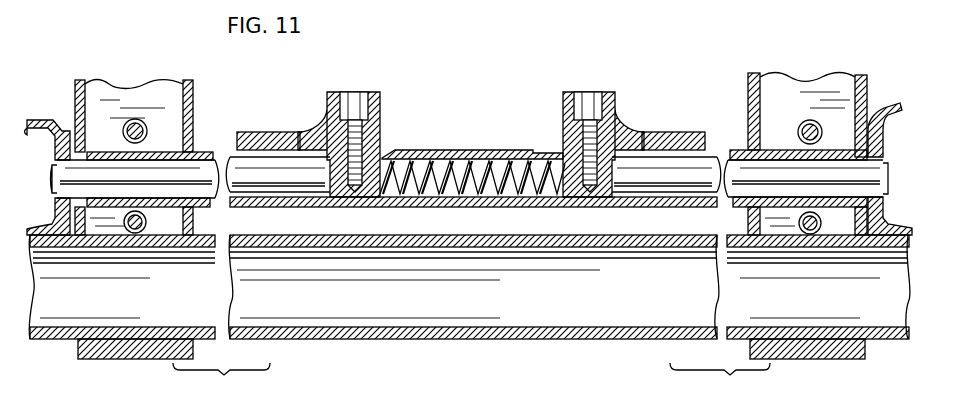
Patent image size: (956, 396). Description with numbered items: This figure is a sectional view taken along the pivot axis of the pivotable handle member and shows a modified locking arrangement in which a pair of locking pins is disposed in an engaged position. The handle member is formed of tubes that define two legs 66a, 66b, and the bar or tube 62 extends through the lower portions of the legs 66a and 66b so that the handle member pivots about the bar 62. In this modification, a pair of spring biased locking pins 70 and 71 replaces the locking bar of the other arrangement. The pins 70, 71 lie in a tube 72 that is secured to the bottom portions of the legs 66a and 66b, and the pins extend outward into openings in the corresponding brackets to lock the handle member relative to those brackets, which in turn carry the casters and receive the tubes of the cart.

The bar or tube 62 is at (388, 337).
The leg 66a is at (197, 88).
The leg 66b is at (752, 103).
The spring biased locking pin 70 is at (197, 173).
The spring biased locking pin 71 is at (640, 178).
The tube 72 is at (408, 208).